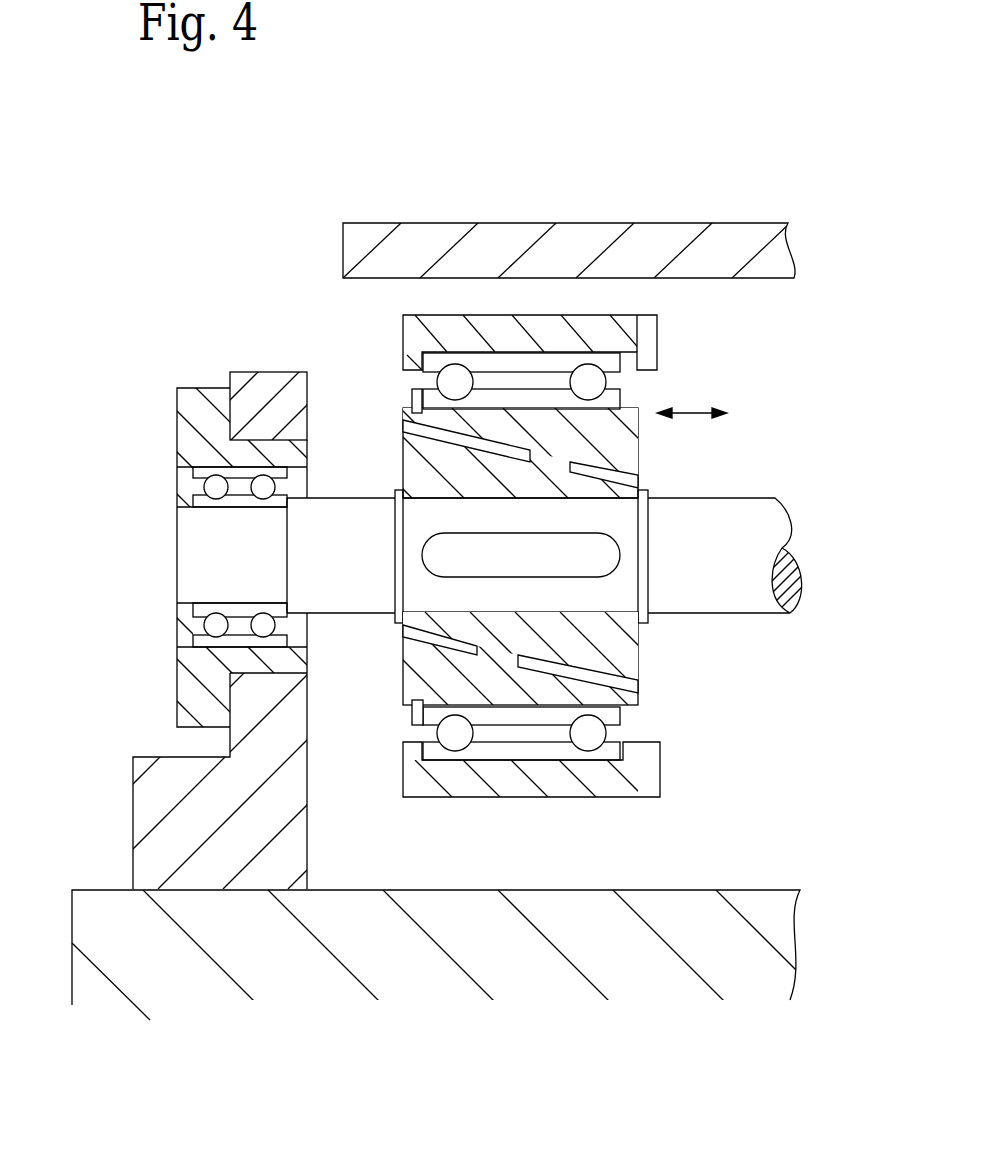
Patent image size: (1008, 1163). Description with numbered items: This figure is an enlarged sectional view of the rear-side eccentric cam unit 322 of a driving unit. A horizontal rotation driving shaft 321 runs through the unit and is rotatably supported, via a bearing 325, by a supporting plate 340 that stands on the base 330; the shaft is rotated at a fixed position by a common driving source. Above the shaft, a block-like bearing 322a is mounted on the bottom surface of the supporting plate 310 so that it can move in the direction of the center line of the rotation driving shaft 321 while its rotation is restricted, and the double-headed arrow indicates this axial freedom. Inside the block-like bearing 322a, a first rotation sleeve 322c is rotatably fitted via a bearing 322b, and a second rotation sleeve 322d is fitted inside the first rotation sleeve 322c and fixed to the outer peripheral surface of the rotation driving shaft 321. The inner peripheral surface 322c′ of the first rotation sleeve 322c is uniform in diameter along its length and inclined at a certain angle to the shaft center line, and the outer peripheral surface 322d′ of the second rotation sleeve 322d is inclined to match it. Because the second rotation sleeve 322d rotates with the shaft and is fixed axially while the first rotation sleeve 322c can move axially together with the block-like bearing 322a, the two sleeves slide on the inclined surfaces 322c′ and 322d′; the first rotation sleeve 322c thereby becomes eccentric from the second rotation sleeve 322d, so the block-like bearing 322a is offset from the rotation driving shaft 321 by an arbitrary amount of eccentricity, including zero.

The supporting plate 310 is at (513, 246).
The rotation driving shaft 321 is at (750, 613).
The eccentric cam unit 322 is at (528, 852).
The block-like bearing 322a is at (402, 330).
The bearing 322b is at (422, 382).
The first rotation sleeve 322c is at (643, 435).
The inner peripheral surface 322c′ is at (596, 680).
The second rotation sleeve 322d is at (416, 468).
The outer peripheral surface 322d′ is at (452, 652).
The bearing 325 is at (193, 625).
The base 330 is at (676, 910).
The supporting plate 340 is at (300, 848).